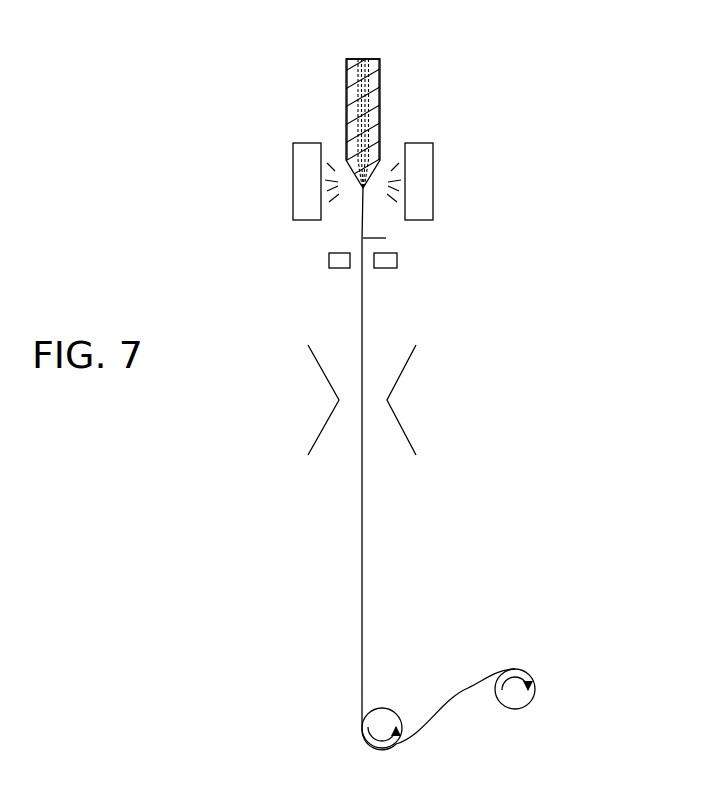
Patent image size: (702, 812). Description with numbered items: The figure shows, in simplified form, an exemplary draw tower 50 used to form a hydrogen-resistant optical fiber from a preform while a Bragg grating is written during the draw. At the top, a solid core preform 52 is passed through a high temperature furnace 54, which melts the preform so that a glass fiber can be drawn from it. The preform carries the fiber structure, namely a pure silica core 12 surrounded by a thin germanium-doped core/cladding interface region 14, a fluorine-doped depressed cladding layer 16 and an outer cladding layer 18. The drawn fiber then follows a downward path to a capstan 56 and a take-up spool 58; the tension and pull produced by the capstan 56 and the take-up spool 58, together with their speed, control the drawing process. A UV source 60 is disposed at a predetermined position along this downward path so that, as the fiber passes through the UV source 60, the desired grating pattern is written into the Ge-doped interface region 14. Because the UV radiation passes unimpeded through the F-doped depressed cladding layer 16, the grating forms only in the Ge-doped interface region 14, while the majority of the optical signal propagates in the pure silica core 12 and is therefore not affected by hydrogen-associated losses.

The pure silica core 12 is at (370, 101).
The germanium-doped core/cladding interface region 14 is at (358, 99).
The fluorine-doped depressed cladding layer 16 is at (352, 84).
The outer cladding layer 18 is at (347, 59).
The draw tower 50 is at (306, 654).
The solid core preform 52 is at (378, 63).
The high temperature furnace 54 is at (425, 173).
The capstan 56 is at (382, 713).
The take-up spool 58 is at (521, 670).
The UV source 60 is at (428, 390).